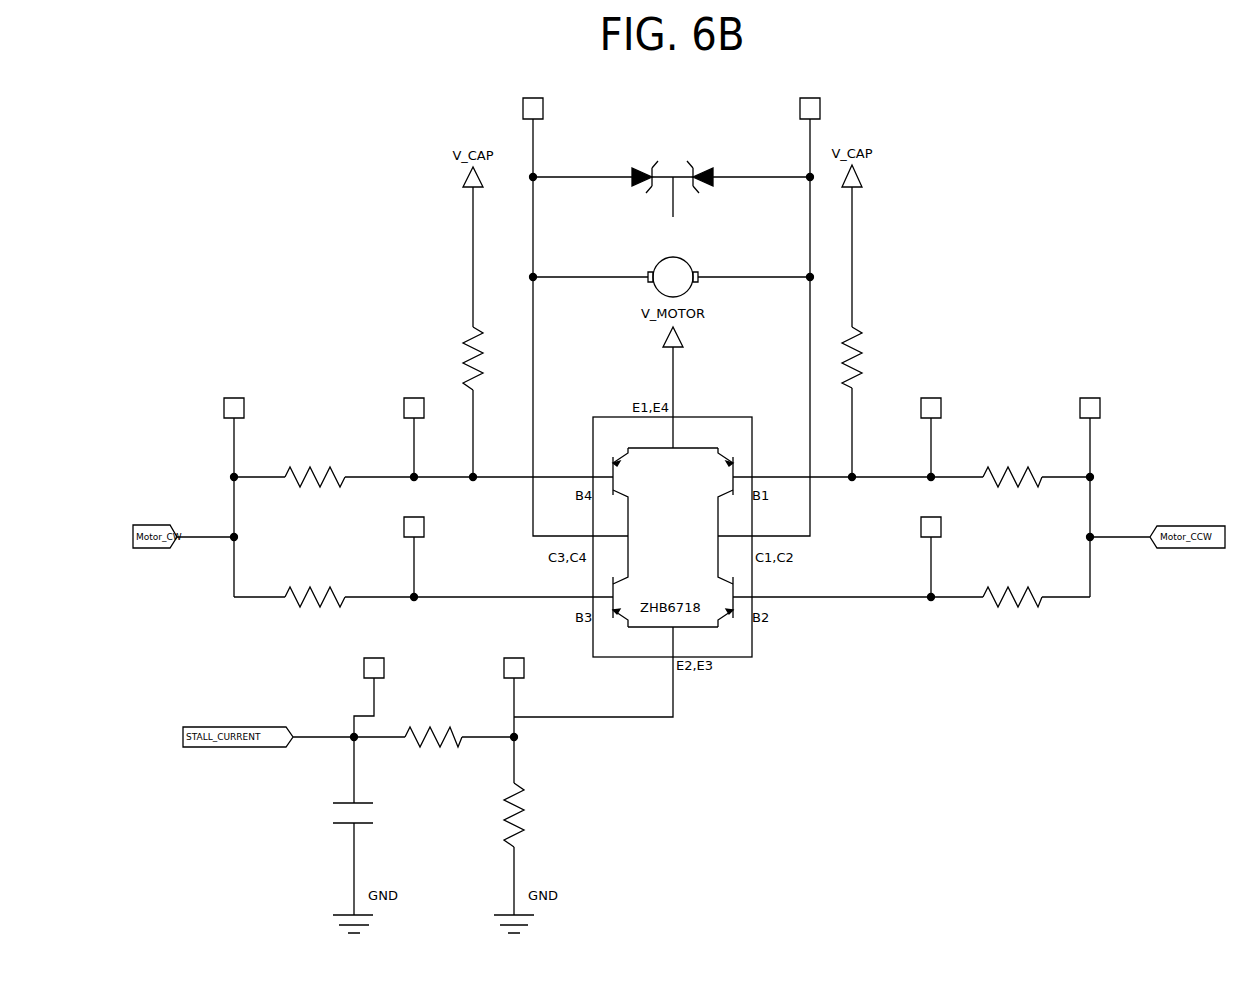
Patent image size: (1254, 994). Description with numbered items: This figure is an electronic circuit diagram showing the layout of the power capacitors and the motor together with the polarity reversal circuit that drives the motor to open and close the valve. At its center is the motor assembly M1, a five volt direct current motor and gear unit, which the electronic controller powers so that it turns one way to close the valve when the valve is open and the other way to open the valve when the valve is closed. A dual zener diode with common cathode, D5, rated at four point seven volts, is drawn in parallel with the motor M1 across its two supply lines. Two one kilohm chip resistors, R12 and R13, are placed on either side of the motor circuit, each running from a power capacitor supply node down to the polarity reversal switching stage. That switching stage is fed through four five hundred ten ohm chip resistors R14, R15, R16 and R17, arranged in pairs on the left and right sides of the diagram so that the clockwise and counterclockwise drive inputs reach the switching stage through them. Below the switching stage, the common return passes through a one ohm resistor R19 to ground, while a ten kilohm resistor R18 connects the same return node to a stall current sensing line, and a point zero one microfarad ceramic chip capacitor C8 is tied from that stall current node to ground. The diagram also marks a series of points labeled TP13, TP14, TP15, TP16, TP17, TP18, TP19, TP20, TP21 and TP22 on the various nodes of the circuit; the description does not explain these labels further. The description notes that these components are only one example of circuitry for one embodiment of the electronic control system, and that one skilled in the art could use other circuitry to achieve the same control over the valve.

The test point TP13 is at (513, 689).
The test point TP14 is at (372, 689).
The test point TP15 is at (233, 489).
The test point TP16 is at (413, 429).
The test point TP17 is at (413, 549).
The test point TP18 is at (572, 308).
The test point TP19 is at (772, 308).
The test point TP20 is at (930, 549).
The test point TP21 is at (930, 429).
The test point TP22 is at (1089, 489).
The resistor chip R12 is at (456, 358).
The resistor chip R13 is at (870, 357).
The resistor chip R14 is at (1012, 632).
The resistor chip R15 is at (1012, 445).
The resistor chip R16 is at (315, 632).
The resistor chip R17 is at (315, 445).
The resistor R18 is at (433, 771).
The resistor R19 is at (532, 815).
The dual zener diode D5 is at (672, 157).
The motor assembly M1 is at (683, 277).
The ceramic chip capacitor C8 is at (325, 815).